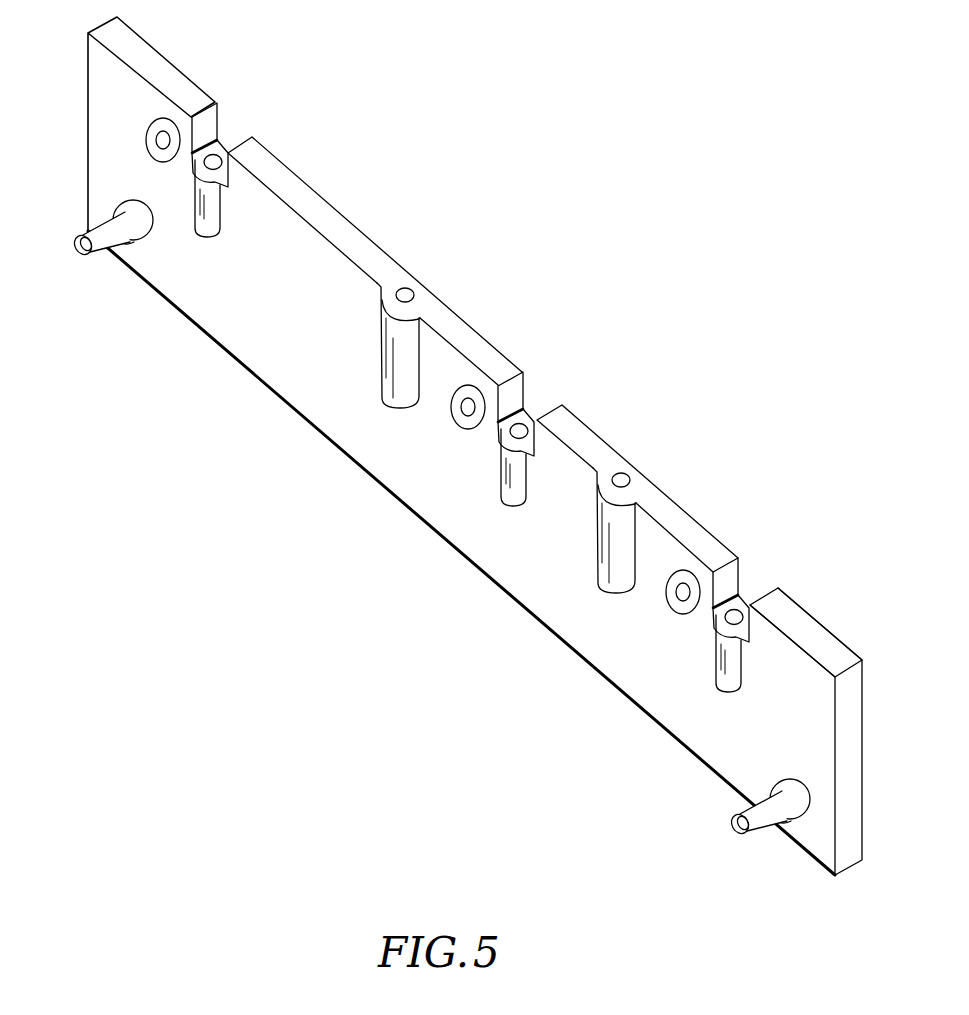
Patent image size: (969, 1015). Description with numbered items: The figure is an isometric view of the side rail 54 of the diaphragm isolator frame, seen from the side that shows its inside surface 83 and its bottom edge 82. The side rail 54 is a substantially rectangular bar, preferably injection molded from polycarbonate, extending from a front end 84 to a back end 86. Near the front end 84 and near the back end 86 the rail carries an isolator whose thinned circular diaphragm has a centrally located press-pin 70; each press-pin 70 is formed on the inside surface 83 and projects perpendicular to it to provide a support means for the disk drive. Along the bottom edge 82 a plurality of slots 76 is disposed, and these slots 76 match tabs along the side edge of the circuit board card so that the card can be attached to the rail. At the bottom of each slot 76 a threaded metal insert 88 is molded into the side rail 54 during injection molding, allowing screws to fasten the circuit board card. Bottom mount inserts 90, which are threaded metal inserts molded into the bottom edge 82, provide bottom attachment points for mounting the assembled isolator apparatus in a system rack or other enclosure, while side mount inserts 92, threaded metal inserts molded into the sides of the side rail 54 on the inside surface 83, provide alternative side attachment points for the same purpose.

The side rail 54 is at (462, 467).
The press-pin 70 is at (78, 251).
The slot 76 is at (208, 123).
The bottom edge 82 is at (332, 215).
The inside surface 83 is at (676, 712).
The front end 84 is at (88, 74).
The back end 86 is at (850, 865).
The threaded metal insert 88 is at (218, 158).
The bottom mount insert 90 is at (408, 292).
The side mount insert 92 is at (146, 142).